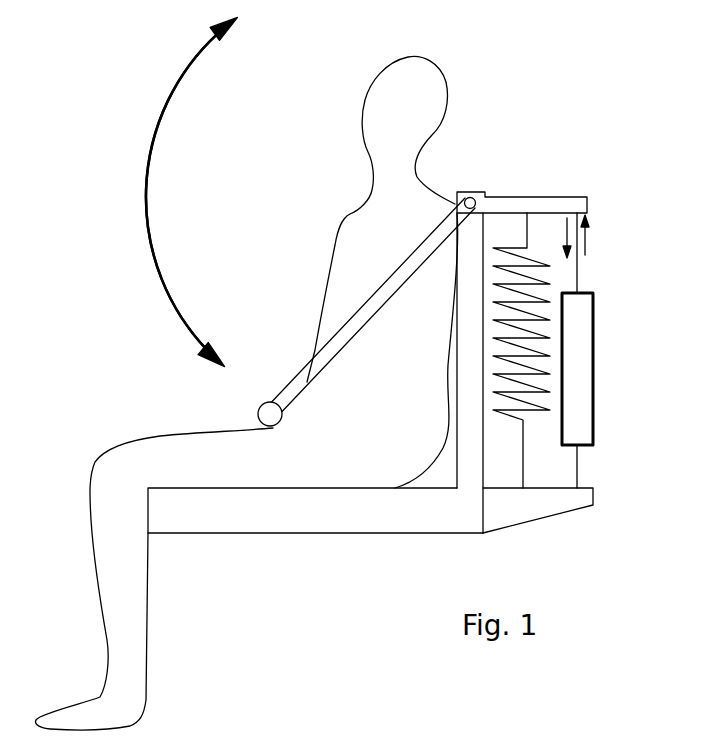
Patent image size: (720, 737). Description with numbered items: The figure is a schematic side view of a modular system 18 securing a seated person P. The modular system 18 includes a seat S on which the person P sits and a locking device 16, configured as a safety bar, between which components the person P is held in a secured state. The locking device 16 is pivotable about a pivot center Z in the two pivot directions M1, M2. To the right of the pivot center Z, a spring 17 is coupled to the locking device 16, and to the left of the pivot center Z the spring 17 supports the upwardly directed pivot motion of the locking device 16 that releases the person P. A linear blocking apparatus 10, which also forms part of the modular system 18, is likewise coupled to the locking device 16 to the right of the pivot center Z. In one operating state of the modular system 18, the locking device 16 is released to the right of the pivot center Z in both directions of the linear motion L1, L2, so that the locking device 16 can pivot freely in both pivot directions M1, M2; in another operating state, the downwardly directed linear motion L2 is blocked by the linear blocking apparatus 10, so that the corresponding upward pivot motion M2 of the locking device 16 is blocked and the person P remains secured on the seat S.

The linear blocking apparatus 10 is at (583, 357).
The locking device 16 is at (268, 413).
The spring 17 is at (525, 443).
The modular system 18 is at (556, 180).
The seat S is at (410, 518).
The person P is at (338, 283).
The pivot center Z is at (473, 198).
The linear motion direction L1 is at (604, 235).
The downwardly directed linear motion direction L2 is at (552, 238).
The pivot direction M1 is at (210, 204).
The pivot direction M2 is at (212, 183).